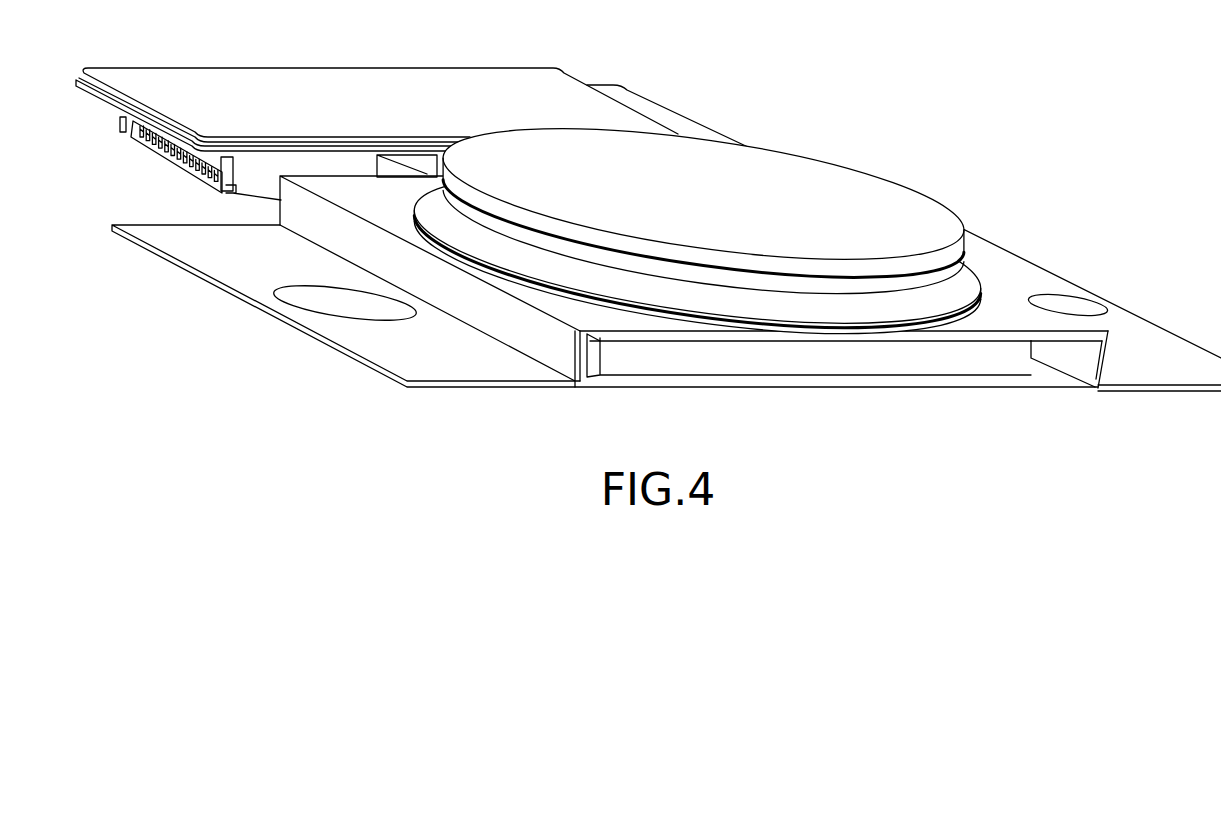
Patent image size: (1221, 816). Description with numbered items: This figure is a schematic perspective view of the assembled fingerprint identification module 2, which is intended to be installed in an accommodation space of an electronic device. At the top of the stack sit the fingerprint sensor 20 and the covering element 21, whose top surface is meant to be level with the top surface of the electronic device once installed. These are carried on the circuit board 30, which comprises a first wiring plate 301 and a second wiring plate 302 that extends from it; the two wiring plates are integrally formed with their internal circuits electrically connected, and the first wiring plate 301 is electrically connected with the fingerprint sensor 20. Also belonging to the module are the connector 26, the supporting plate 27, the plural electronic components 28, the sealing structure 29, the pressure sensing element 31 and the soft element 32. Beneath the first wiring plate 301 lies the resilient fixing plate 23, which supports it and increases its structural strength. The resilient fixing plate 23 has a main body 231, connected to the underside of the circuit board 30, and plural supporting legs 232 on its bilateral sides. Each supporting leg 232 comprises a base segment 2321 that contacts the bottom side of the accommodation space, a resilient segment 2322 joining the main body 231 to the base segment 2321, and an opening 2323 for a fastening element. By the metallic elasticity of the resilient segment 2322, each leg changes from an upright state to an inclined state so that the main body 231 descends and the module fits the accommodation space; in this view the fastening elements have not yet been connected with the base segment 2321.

The fingerprint identification module 2 is at (818, 42).
The fingerprint sensor 20 is at (720, 198).
The covering element 21 is at (860, 190).
The resilient fixing plate 23 is at (666, 302).
The connector 26 is at (155, 153).
The supporting plate 27 is at (303, 83).
The electronic components 28 is at (417, 162).
The sealing structure 29 is at (507, 257).
The circuit board 30 is at (617, 250).
The first wiring plate 301 is at (960, 312).
The second wiring plate 302 is at (103, 98).
The pressure sensing element 31 is at (738, 343).
The soft element 32 is at (820, 363).
The main body 231 is at (890, 337).
The supporting leg 232 is at (1112, 378).
The base segment 2321 is at (605, 308).
The resilient segment 2322 is at (577, 363).
The opening 2323 is at (333, 287).